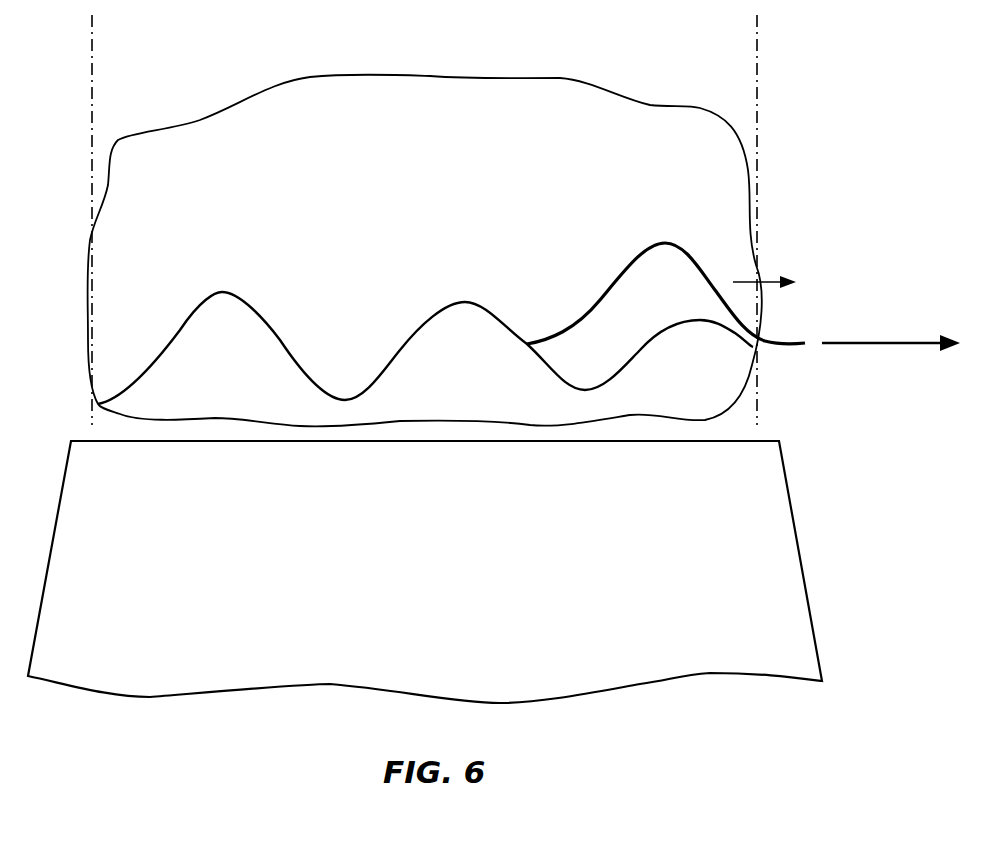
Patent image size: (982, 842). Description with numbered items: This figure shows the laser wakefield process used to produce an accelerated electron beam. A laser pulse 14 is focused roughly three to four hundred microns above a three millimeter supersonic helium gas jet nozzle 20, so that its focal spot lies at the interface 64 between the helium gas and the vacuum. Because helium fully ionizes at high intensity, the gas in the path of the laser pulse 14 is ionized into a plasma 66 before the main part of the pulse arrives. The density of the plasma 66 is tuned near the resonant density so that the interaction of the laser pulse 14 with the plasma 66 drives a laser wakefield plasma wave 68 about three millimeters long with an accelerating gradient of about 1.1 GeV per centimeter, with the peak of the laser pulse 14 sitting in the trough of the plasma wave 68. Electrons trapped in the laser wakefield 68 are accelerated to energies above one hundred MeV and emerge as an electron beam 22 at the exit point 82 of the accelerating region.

The interface 64 is at (62, 100).
The exit point 82 is at (777, 98).
The plasma 66 is at (446, 129).
The laser wakefield plasma wave 68 is at (284, 327).
The laser pulse 14 is at (617, 269).
The electron beam 22 is at (902, 340).
The supersonic helium gas jet nozzle 20 is at (445, 521).